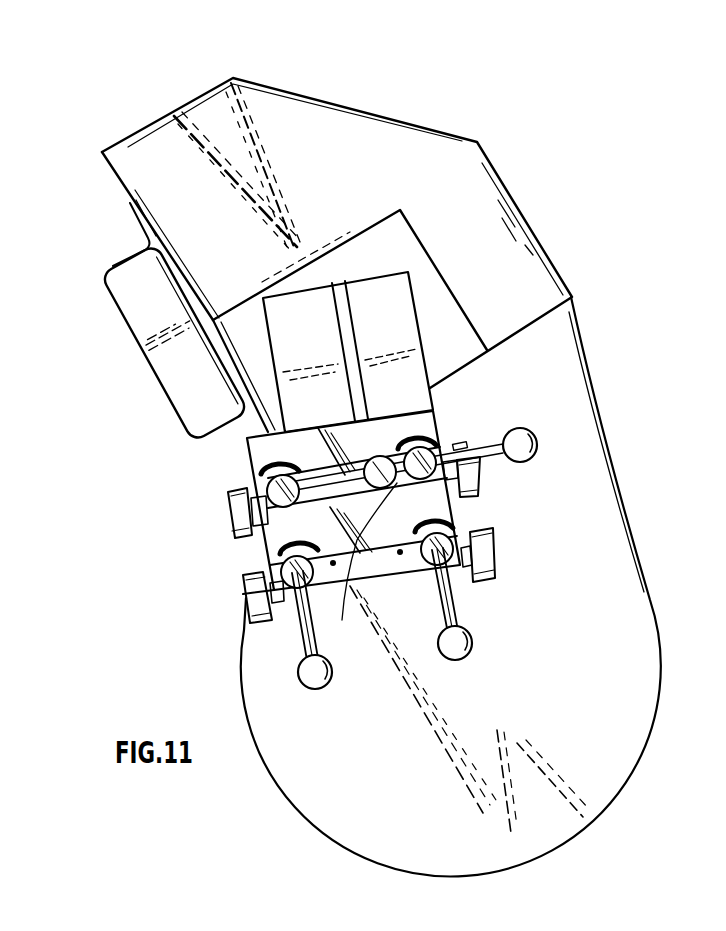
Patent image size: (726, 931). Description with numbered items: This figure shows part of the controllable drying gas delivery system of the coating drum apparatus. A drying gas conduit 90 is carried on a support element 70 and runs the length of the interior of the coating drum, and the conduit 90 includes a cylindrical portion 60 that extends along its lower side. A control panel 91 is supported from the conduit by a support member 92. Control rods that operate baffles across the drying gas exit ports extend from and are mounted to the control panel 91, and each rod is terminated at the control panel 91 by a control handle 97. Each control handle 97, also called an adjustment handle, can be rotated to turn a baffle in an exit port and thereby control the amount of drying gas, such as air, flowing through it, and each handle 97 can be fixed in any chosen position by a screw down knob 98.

The cylindrical portion 60 is at (589, 690).
The support element 70 is at (171, 315).
The drying gas conduit 90 is at (352, 187).
The control panel 91 is at (430, 413).
The support member 92 is at (394, 338).
The control handle 97 is at (513, 428).
The screw down knob 98 is at (480, 492).